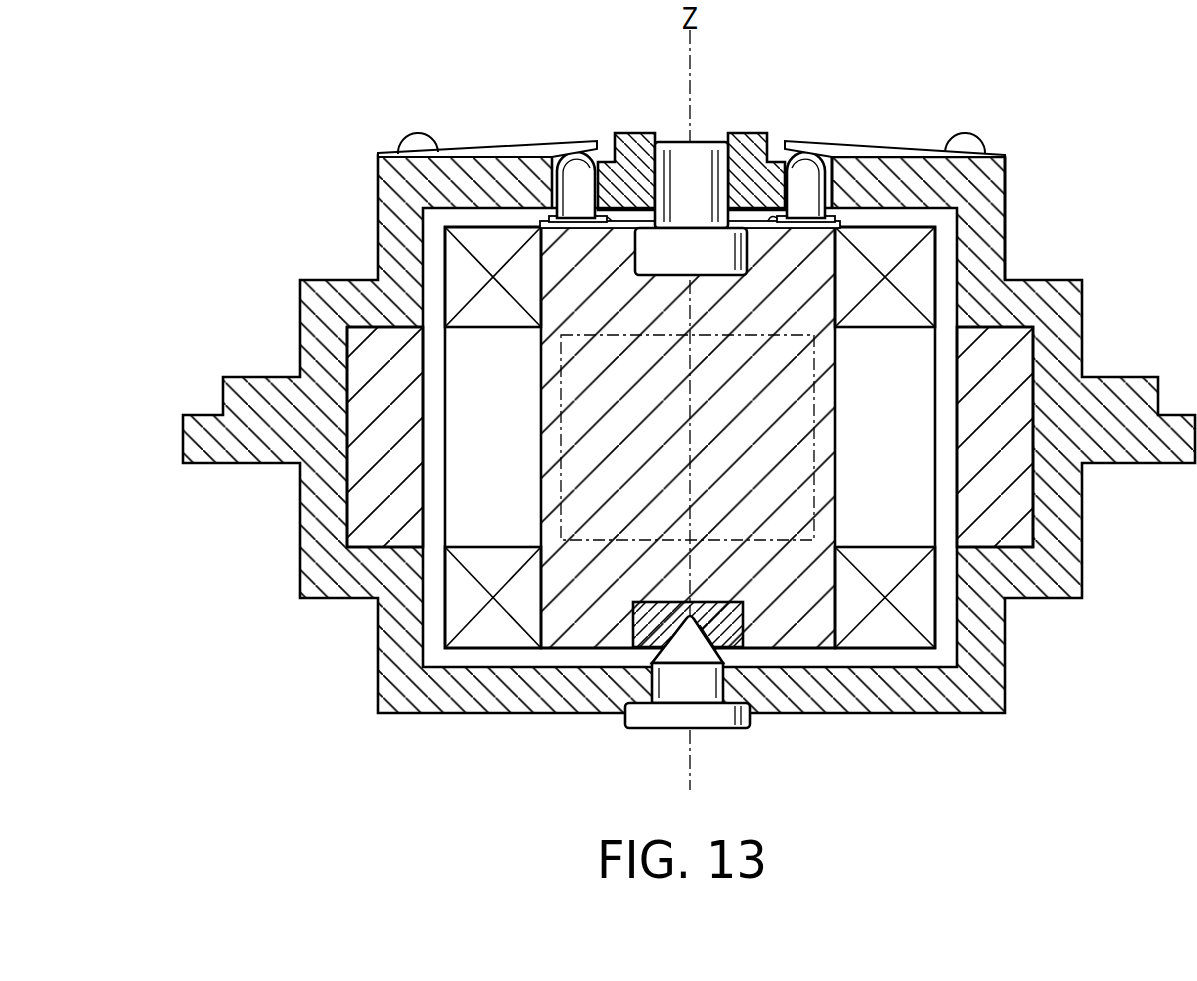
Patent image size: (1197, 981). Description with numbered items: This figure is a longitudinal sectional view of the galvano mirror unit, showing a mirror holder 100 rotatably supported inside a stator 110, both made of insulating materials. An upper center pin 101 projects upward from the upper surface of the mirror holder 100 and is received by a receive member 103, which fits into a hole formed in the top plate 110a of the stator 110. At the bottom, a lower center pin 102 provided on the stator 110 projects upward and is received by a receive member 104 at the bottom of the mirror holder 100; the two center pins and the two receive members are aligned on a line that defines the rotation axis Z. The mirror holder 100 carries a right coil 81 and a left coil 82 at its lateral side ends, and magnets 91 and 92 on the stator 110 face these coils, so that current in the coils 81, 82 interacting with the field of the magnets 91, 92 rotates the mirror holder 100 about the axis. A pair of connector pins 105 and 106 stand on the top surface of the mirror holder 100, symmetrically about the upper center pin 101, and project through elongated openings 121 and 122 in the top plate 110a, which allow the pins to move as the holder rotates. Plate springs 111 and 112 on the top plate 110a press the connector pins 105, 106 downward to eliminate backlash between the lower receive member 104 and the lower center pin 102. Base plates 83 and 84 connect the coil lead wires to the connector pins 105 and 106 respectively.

The stator 110 is at (1024, 197).
The top plate 110a is at (920, 182).
The plate spring 112 is at (547, 143).
The plate spring 111 is at (842, 148).
The connector pin 106 is at (570, 163).
The connector pin 105 is at (805, 172).
The upper center pin 101 is at (682, 170).
The receive member 103 is at (742, 148).
The opening 122 is at (553, 213).
The opening 121 is at (828, 213).
The base plate 84 is at (610, 224).
The base plate 83 is at (777, 224).
The mirror holder 100 is at (572, 622).
The left coil 82 is at (450, 608).
The right coil 81 is at (920, 612).
The magnet 92 is at (360, 498).
The magnet 91 is at (1008, 500).
The lower center pin 102 is at (673, 690).
The receive member 104 is at (723, 635).